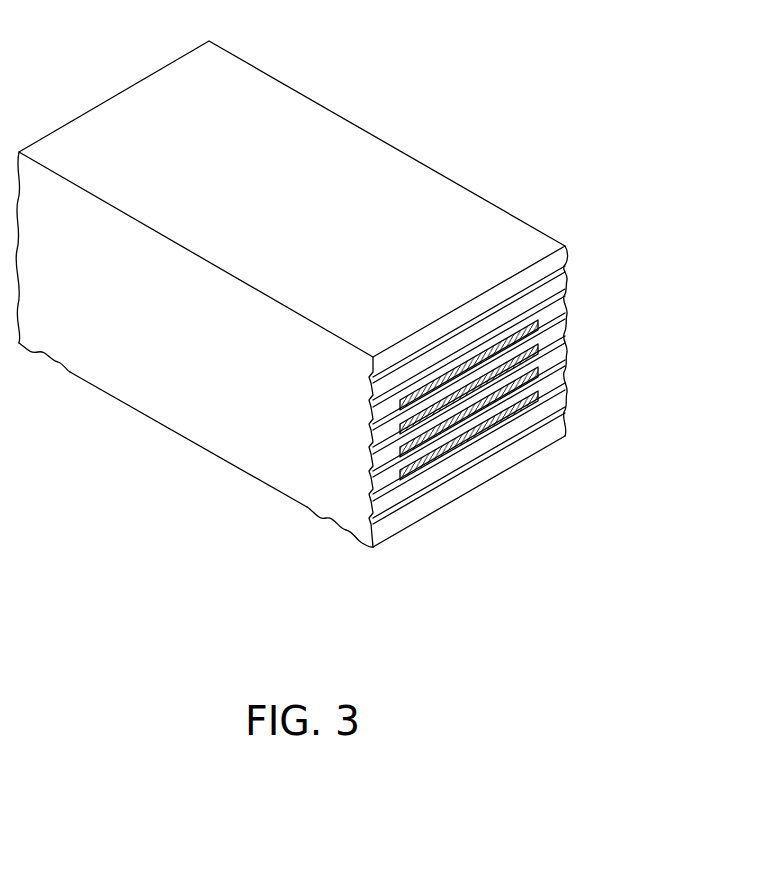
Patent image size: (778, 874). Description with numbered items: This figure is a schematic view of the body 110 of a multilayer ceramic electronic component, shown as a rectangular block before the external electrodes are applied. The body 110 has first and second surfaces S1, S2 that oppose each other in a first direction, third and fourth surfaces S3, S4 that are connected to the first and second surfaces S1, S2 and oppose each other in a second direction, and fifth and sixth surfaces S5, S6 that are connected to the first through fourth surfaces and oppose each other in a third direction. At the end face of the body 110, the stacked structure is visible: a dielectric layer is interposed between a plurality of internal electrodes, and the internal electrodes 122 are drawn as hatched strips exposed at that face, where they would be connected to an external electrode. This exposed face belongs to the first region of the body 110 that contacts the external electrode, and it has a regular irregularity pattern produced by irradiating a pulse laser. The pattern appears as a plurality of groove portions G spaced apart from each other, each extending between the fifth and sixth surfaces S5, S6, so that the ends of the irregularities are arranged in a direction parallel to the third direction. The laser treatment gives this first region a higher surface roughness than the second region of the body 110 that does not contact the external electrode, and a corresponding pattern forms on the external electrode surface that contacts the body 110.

The body 110 is at (268, 108).
The internal electrode 122 is at (530, 402).
The groove portion G is at (373, 460).
The first surface S1 is at (168, 447).
The second surface S2 is at (358, 188).
The third surface S3 is at (95, 82).
The fourth surface S4 is at (587, 363).
The fifth surface S5 is at (264, 441).
The sixth surface S6 is at (442, 161).